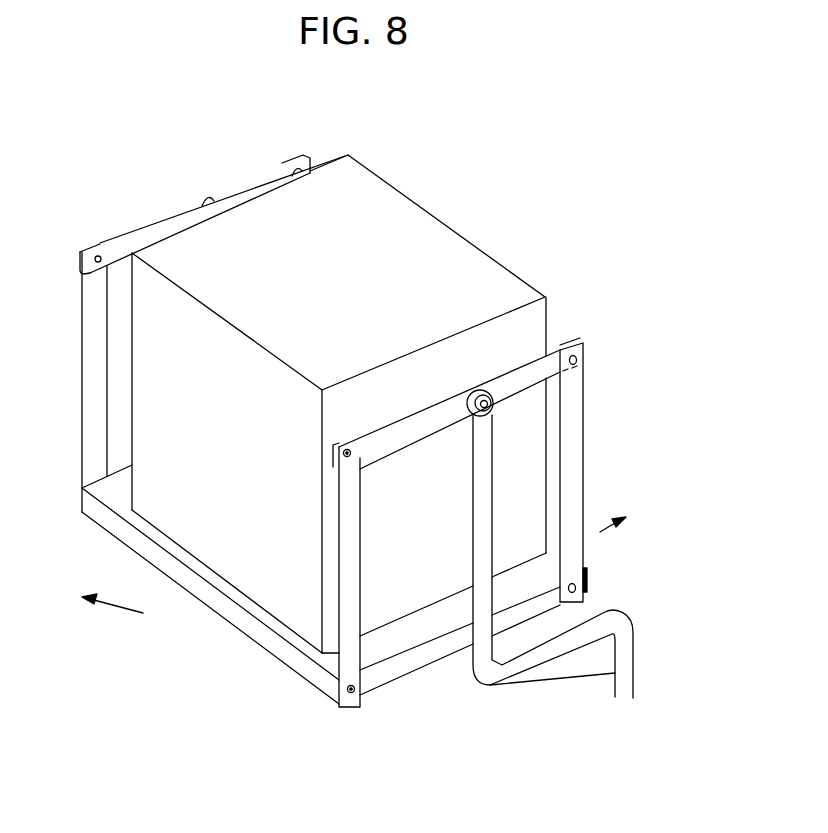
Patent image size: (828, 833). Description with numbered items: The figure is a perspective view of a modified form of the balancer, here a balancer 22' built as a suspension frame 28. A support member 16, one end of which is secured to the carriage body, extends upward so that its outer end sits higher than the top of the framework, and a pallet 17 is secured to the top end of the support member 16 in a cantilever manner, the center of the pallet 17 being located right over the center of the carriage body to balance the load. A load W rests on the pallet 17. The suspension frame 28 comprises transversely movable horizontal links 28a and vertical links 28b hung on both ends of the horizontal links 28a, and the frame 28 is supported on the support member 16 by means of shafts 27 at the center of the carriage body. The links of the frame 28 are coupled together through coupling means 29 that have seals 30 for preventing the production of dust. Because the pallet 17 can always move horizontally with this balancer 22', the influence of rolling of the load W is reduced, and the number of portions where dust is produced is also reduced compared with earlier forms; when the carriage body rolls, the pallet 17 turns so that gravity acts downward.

The support member 16 is at (558, 645).
The pallet 17 is at (253, 628).
The balancer 22' is at (550, 480).
The shafts 27 is at (214, 207).
The suspension frame 28 is at (585, 405).
The horizontal links 28a is at (538, 367).
The vertical links 28b is at (350, 662).
The coupling means 29 is at (350, 456).
The seals 30 is at (484, 395).
The load W is at (428, 225).